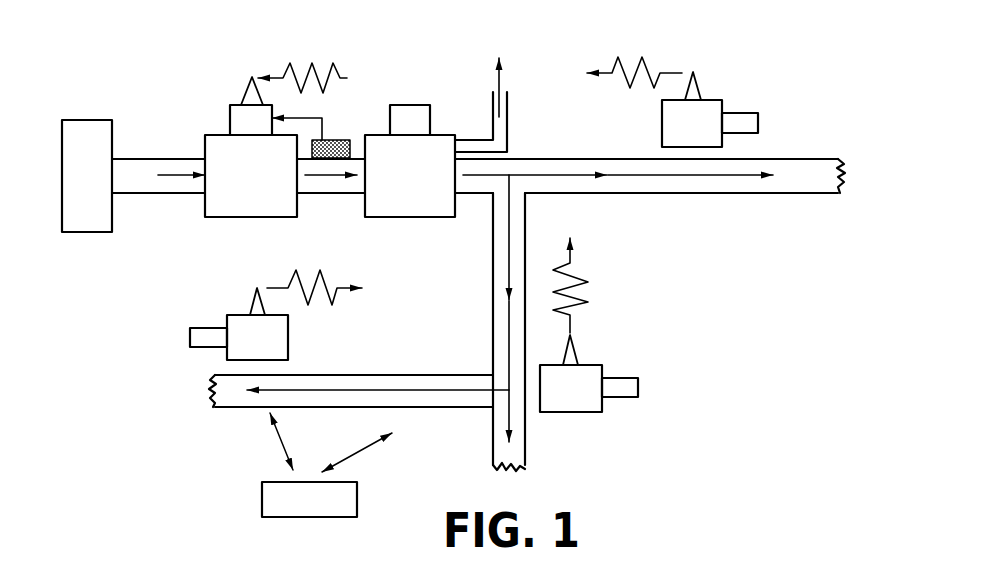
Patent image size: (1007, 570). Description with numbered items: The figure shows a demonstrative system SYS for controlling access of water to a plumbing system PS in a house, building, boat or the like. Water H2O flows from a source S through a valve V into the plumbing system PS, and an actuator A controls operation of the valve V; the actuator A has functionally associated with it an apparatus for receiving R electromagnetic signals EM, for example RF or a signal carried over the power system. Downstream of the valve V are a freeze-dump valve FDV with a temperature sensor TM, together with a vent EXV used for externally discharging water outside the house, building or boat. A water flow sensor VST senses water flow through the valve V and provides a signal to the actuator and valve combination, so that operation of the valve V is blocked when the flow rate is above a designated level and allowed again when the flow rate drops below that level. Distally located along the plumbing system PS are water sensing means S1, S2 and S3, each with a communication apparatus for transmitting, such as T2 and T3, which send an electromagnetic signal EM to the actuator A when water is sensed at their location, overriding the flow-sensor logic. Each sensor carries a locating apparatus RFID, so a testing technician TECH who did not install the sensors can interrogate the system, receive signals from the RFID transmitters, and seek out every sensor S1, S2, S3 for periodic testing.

The source of water S is at (80, 190).
The water H2O is at (134, 176).
The valve V is at (243, 190).
The actuator A is at (243, 132).
The apparatus for receiving R is at (246, 85).
The electromagnetic signal EM is at (470, 179).
The water flow sensor VST is at (347, 134).
The temperature sensor TM is at (396, 132).
The freeze-dump valve FDV is at (388, 190).
The vent EXV is at (505, 94).
The system SYS is at (742, 62).
The water sensing means S1 is at (678, 136).
The water sensing means S2 is at (557, 401).
The water sensing means S3 is at (243, 350).
The communication apparatus for transmitting T2 is at (579, 345).
The communication apparatus for transmitting T3 is at (248, 292).
The apparatus for locating the sensors RFID is at (756, 110).
The plumbing system PS is at (531, 213).
The testing technician TECH is at (327, 465).